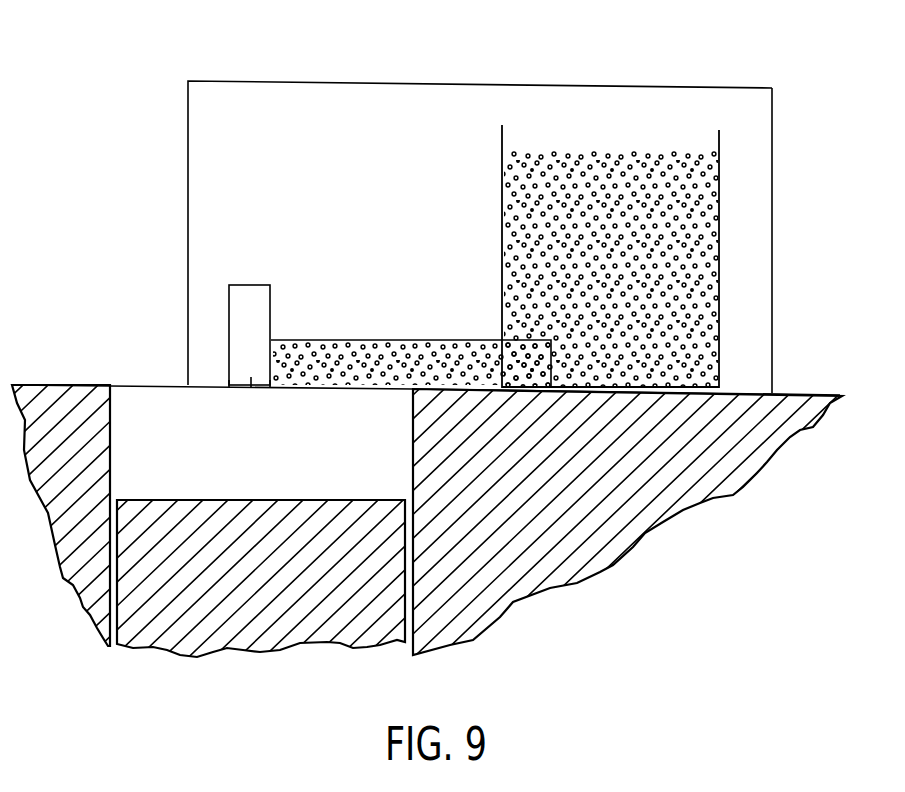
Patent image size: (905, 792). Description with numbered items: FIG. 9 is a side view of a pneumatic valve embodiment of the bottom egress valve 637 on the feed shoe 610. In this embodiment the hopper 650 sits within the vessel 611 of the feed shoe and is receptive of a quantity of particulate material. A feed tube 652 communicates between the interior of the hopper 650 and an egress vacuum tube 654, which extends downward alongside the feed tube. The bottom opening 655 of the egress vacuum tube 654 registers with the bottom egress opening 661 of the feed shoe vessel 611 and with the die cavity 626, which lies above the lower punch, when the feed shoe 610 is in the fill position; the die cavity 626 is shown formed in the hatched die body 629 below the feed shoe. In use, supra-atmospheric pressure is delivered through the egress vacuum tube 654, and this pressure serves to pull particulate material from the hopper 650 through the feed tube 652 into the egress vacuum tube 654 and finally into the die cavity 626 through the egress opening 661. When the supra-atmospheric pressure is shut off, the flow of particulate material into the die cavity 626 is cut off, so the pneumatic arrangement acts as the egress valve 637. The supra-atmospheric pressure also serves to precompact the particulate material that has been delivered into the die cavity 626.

The feed shoe 610 is at (521, 197).
The vessel 611 is at (772, 295).
The hopper 650 is at (634, 155).
The feed tube 652 is at (431, 356).
The egress vacuum tube 654 is at (218, 333).
The bottom egress valve 637 is at (229, 387).
The bottom opening 655 is at (251, 387).
The bottom egress opening 661 is at (267, 388).
The die cavity 626 is at (363, 478).
The build block 629 is at (235, 615).